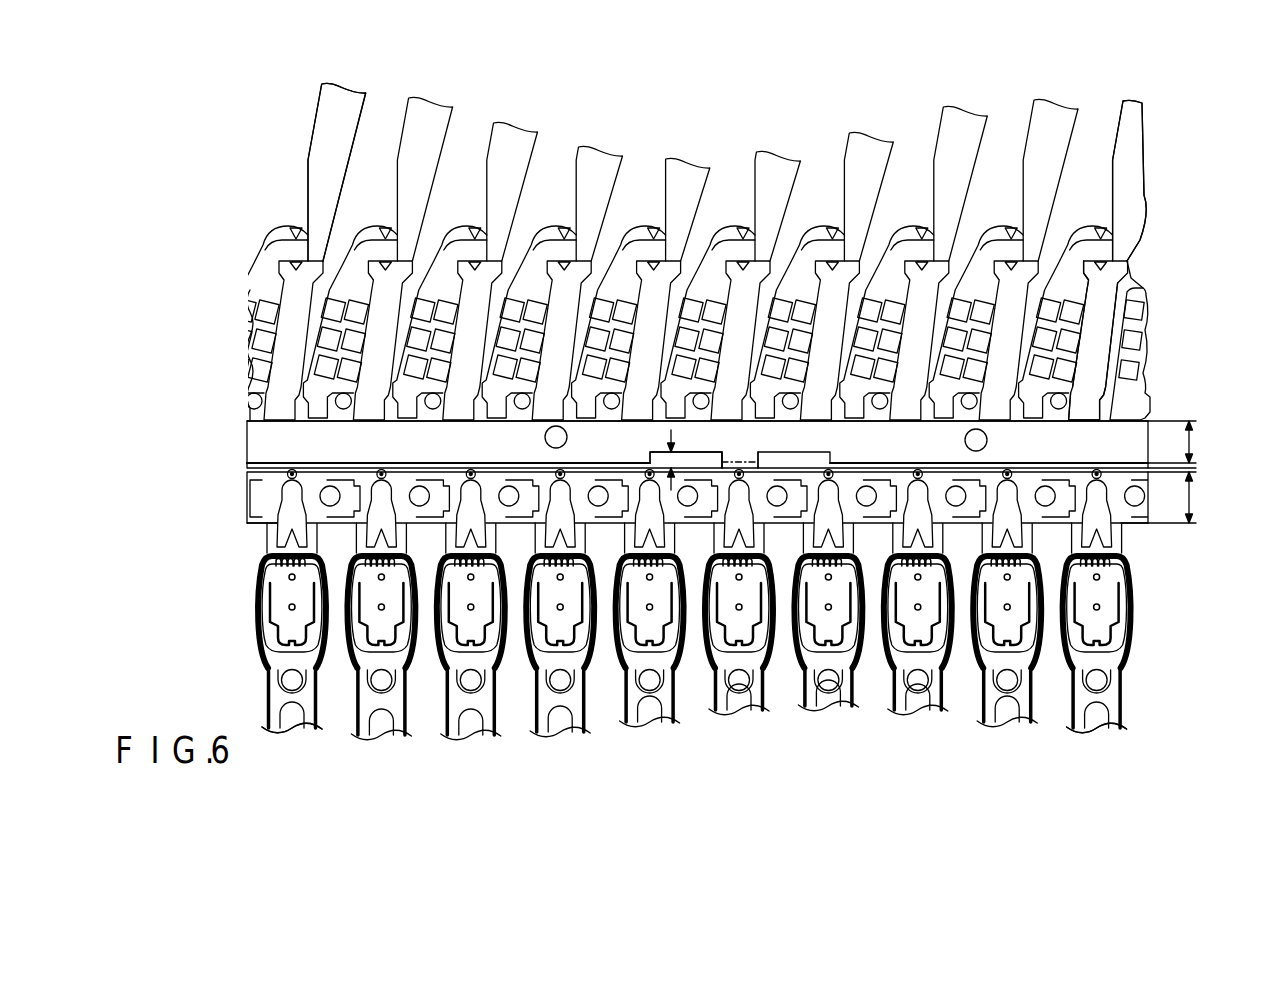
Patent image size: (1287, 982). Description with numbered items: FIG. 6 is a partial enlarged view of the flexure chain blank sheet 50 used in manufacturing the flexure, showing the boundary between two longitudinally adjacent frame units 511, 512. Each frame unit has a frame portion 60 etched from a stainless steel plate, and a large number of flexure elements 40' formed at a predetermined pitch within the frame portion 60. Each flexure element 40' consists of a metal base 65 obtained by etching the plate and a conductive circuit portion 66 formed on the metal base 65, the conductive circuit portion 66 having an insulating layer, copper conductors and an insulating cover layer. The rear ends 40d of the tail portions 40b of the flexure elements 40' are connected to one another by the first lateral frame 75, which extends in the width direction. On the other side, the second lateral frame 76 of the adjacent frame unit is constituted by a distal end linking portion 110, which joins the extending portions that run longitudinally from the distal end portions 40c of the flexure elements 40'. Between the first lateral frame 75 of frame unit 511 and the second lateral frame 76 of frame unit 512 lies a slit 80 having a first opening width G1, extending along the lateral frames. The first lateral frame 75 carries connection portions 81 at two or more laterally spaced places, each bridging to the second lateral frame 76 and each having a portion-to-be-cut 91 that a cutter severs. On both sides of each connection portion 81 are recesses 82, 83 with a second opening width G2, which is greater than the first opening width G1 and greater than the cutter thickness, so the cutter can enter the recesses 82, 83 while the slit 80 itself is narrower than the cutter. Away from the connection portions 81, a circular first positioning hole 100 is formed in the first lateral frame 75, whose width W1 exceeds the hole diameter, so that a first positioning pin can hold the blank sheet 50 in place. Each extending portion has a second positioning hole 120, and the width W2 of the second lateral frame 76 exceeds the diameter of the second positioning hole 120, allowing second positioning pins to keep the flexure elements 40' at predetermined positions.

The flexure chain blank sheet 50 is at (729, 112).
The frame unit 511 is at (1174, 134).
The frame unit 512 is at (1164, 711).
The flexure element 40' is at (708, 438).
The tail portion 40b is at (1086, 292).
The distal end portion 40c is at (850, 505).
The rear end 40d is at (1062, 427).
The first lateral frame 75 is at (1148, 421).
The second lateral frame 76 is at (1127, 538).
The frame portion 60 is at (1148, 533).
The metal base 65 is at (1127, 557).
The conductive circuit portion 66 is at (1135, 640).
The distal end linking portion 110 is at (314, 505).
The first positioning hole 100 is at (545, 437).
The second positioning hole 120 is at (507, 493).
The slit 80 is at (415, 463).
The connection portion 81 is at (735, 452).
The recess 82 is at (812, 455).
The recess 83 is at (650, 455).
The portion-to-be-cut 91 is at (742, 462).
The first opening width G1 is at (1193, 468).
The second opening width G2 is at (690, 455).
The width of first lateral frame W1 is at (1193, 443).
The width of second lateral frame W2 is at (1193, 497).